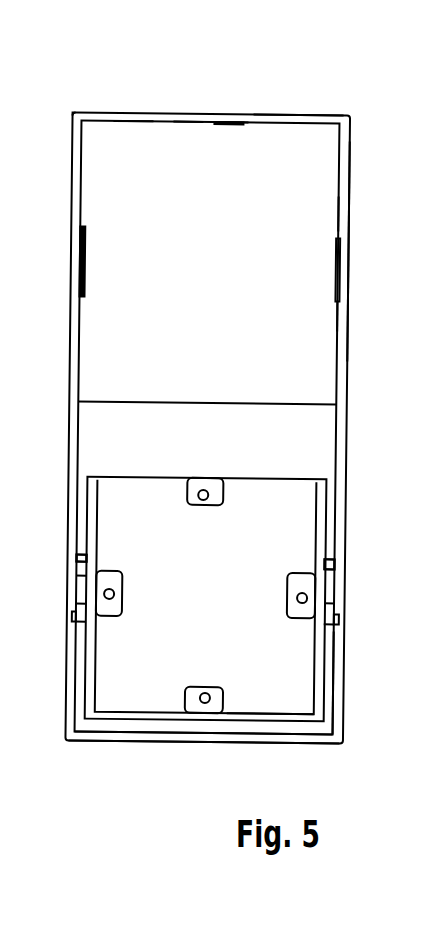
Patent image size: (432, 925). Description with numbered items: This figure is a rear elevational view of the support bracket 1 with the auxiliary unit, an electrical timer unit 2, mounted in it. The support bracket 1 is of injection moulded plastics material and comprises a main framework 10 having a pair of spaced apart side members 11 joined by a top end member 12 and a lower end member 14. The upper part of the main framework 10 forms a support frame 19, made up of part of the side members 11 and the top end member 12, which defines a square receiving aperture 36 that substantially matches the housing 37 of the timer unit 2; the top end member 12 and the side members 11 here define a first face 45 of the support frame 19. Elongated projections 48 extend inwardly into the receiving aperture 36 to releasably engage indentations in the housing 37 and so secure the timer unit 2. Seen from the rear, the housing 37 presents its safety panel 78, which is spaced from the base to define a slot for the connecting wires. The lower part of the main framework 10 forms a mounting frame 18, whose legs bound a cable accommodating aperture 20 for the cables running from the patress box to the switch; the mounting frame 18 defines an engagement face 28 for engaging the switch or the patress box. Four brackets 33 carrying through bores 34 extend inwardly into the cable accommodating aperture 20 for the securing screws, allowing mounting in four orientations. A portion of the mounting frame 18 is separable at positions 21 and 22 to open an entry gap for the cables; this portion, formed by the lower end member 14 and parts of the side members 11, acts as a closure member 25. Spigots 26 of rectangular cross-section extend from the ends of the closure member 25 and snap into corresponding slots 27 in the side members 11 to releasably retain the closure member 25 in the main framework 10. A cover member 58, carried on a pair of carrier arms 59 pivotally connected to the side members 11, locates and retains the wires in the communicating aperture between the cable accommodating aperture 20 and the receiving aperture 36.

The support bracket 1 is at (358, 125).
The timer unit 2 is at (303, 205).
The main framework 10 is at (278, 115).
The side members 11 is at (348, 365).
The top end member 12 is at (223, 116).
The lower end member 14 is at (207, 733).
The mounting frame 18 is at (68, 548).
The support frame 19 is at (183, 121).
The cable accommodating aperture 20 is at (310, 693).
The separation position 21 is at (342, 622).
The separation position 22 is at (68, 633).
The closure member 25 is at (330, 727).
The spigots 26 is at (332, 587).
The slots 27 is at (343, 602).
The engagement face 28 is at (343, 705).
The brackets 33 is at (190, 507).
The through bores 34 is at (209, 497).
The receiving aperture 36 is at (350, 155).
The housing 37 is at (122, 122).
The first face 45 is at (350, 212).
The elongated projections 48 is at (207, 125).
The cover member 58 is at (327, 435).
The carrier arms 59 is at (82, 502).
The safety panel 78 is at (293, 315).